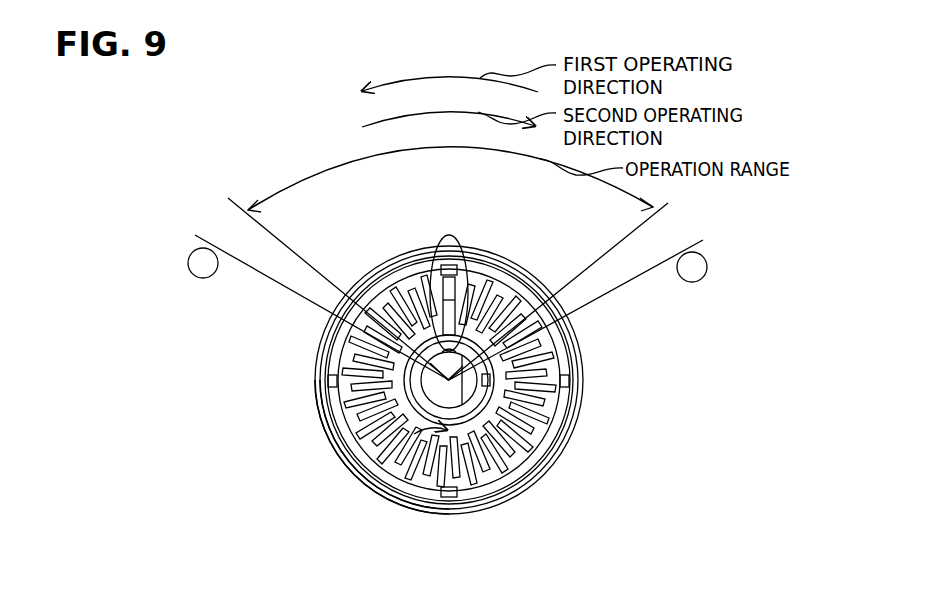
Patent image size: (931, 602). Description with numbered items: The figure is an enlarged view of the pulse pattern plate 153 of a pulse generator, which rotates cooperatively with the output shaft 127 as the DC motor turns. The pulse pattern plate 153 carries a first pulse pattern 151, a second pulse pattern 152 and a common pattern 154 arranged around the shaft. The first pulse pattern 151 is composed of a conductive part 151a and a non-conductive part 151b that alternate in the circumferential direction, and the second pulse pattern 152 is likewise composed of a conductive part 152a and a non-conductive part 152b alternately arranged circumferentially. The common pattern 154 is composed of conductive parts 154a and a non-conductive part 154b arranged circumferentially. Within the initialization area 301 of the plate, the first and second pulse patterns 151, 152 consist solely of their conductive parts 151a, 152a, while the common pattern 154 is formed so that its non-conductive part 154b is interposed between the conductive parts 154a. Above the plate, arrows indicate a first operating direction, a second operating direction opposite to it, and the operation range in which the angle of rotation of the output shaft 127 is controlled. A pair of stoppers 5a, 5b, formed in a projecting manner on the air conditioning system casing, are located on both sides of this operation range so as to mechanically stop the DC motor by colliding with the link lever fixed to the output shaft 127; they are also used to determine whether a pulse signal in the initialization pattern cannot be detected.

The stopper 5a is at (692, 282).
The stopper 5b is at (203, 278).
The output shaft 127 is at (440, 384).
The first pulse pattern 151 is at (445, 450).
The conductive part 151a is at (462, 300).
The non-conductive part 151b is at (342, 385).
The second pulse pattern 152 is at (425, 480).
The conductive part 152a is at (452, 300).
The non-conductive part 152b is at (360, 388).
The pulse pattern plate 153 is at (336, 458).
The common pattern 154 is at (388, 488).
The conductive part 154a is at (538, 288).
The non-conductive part 154b is at (497, 278).
The initialization area 301 is at (448, 232).